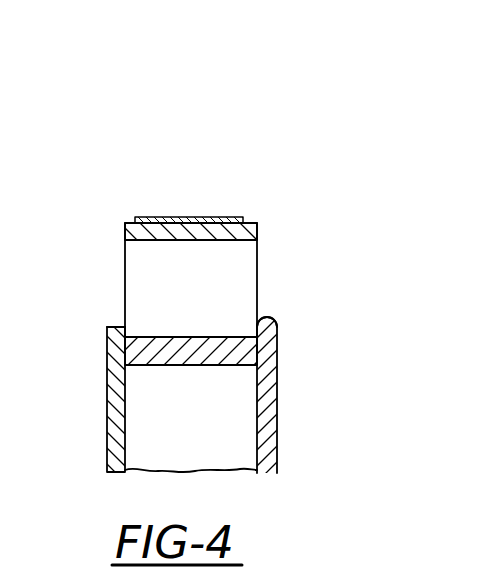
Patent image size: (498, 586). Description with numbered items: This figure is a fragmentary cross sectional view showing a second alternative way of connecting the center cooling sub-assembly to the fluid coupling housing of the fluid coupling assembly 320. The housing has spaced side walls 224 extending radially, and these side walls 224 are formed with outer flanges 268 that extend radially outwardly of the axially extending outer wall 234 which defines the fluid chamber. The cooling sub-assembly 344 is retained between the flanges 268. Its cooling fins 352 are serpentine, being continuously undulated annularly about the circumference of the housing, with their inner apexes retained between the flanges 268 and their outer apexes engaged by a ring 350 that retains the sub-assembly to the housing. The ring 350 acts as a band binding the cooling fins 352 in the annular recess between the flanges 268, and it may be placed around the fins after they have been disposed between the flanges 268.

The fluid coupling assembly 320 is at (240, 128).
The cooling sub-assembly 344 is at (108, 206).
The ring 350 is at (228, 217).
The cooling fins 352 is at (245, 256).
The flanges 268 is at (110, 327).
The side walls 224 is at (112, 423).
The axially extending outer wall 234 is at (186, 357).